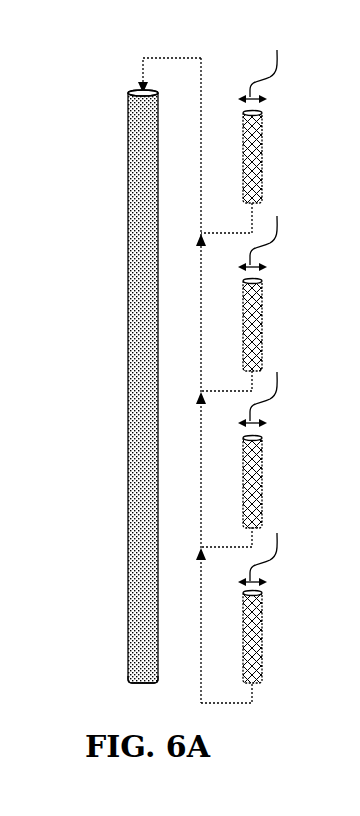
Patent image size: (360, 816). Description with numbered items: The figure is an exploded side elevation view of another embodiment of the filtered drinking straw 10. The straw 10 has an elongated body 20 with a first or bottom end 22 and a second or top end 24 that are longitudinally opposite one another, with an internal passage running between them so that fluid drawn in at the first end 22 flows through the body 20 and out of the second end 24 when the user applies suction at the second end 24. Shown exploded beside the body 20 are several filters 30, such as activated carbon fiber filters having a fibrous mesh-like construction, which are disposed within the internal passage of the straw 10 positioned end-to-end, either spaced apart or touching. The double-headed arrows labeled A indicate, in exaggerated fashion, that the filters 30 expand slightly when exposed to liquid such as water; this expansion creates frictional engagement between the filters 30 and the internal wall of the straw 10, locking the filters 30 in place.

The filtered drinking straw 10 is at (88, 61).
The body 20 is at (128, 173).
The first end 22 is at (132, 684).
The second end 24 is at (128, 93).
The filter 30 is at (262, 144).